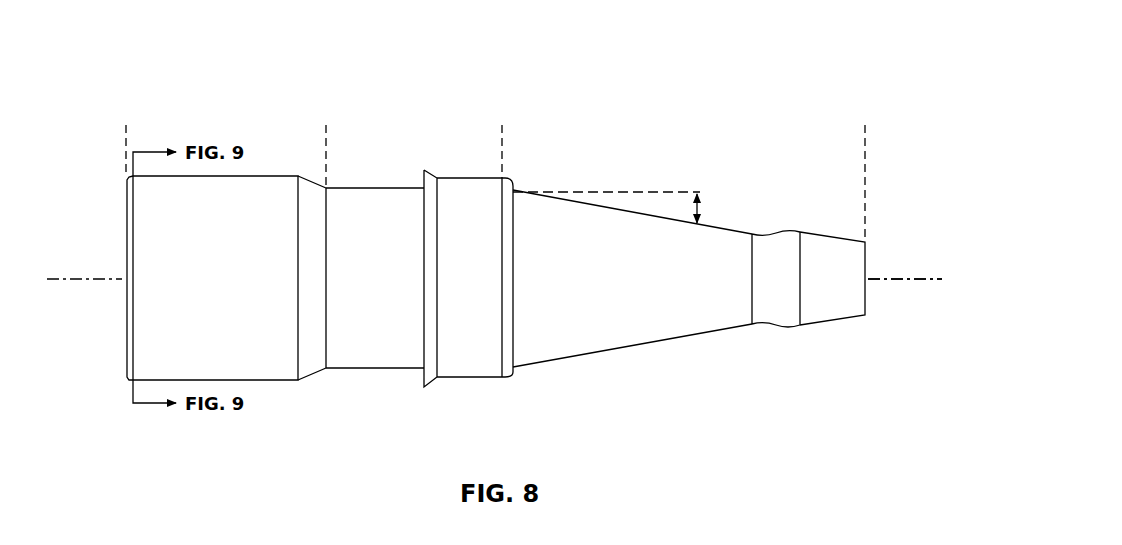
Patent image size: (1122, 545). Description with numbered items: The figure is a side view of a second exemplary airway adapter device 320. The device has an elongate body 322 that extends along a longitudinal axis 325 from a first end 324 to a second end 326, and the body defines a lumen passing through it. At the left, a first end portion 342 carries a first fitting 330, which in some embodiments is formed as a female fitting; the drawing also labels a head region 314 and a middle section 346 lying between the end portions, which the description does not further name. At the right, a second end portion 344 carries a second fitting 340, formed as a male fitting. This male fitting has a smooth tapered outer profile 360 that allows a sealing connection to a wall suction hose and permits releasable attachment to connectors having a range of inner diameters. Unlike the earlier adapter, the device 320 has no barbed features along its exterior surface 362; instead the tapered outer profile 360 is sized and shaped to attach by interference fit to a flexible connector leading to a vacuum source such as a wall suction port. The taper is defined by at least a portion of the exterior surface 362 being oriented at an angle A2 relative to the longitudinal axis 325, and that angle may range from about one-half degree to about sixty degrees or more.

The airway adapter device 320 is at (868, 40).
The first end portion 342 is at (326, 125).
The intermediate section 346 is at (502, 125).
The second end portion 344 is at (865, 125).
The head 314 is at (280, 176).
The elongate body 322 is at (380, 188).
The first end 324 is at (126, 242).
The longitudinal axis 325 is at (932, 279).
The second end 326 is at (866, 296).
The first fitting 330 is at (322, 379).
The second fitting 340 is at (748, 231).
The tapered outer profile 360 is at (703, 334).
The exterior surface 362 is at (588, 353).
The angle A2 is at (701, 208).